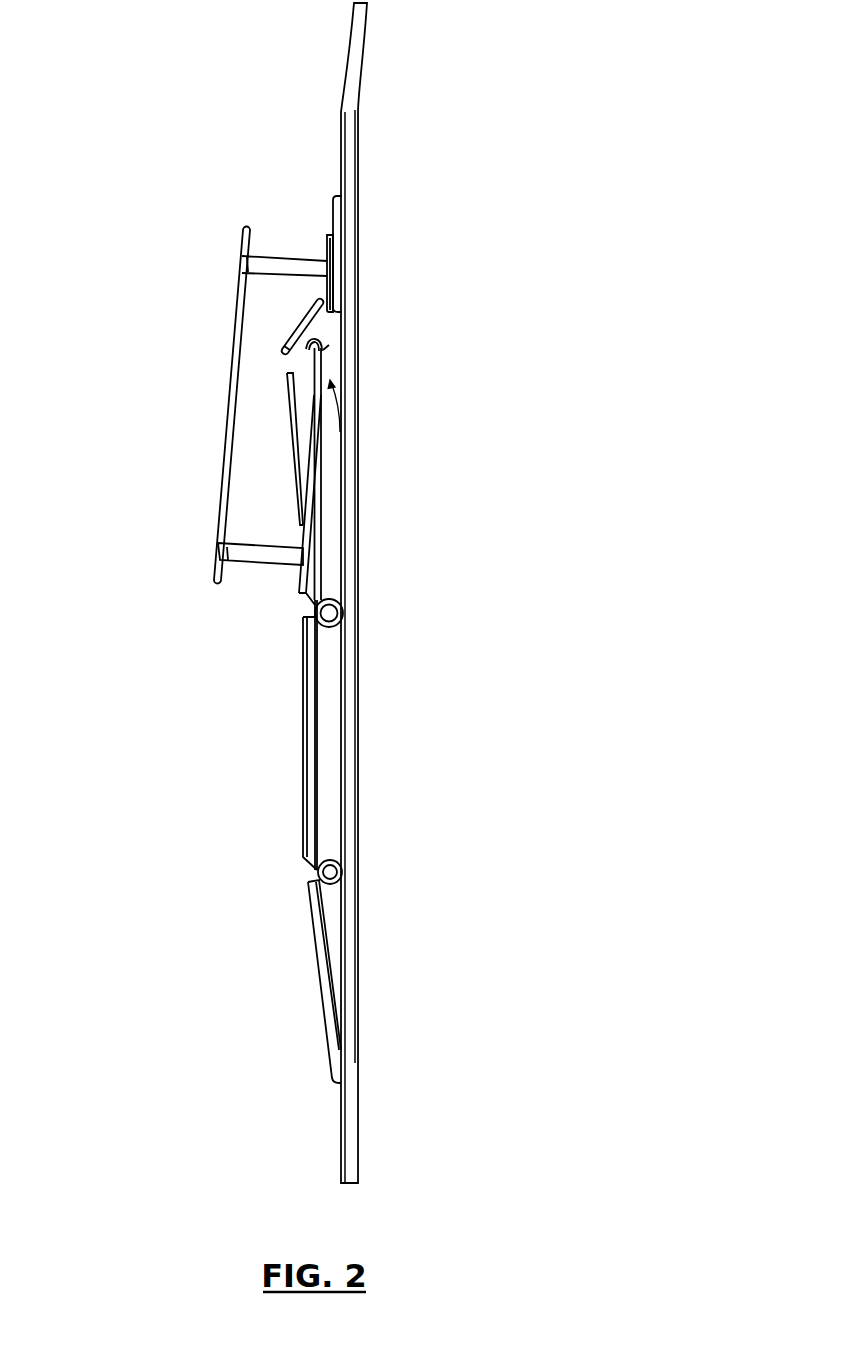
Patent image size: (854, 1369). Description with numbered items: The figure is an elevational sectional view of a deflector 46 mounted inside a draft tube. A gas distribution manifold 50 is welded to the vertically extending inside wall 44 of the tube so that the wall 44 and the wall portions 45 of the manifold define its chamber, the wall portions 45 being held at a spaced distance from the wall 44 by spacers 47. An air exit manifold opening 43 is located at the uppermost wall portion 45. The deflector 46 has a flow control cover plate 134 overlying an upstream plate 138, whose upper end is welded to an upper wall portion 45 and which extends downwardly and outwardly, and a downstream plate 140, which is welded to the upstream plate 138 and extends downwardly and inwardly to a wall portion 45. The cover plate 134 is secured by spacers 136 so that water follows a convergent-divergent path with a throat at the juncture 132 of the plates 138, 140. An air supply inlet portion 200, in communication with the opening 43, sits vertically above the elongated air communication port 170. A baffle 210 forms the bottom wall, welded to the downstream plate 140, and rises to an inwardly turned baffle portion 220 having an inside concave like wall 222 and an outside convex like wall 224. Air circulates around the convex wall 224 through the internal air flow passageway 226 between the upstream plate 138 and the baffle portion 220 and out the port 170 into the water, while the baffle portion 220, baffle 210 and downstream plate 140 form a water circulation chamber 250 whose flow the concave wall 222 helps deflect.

The air exit manifold opening 43 is at (350, 418).
The vertically extending inside wall 44 is at (358, 722).
The wall portions 45 is at (342, 216).
The deflector 46 is at (136, 393).
The spacers 47 is at (343, 607).
The gas distribution manifold 50 is at (303, 777).
The juncture 132 is at (288, 343).
The flow control cover plate 134 is at (308, 312).
The spacers 136 is at (270, 256).
The upstream plate 138 is at (312, 306).
The downstream plate 140 is at (225, 449).
The elongated air communication port 170 is at (271, 384).
The air supply inlet portion 200 is at (340, 334).
The baffle 210 is at (326, 363).
The baffle portion 220 is at (326, 340).
The inside concave like wall 222 is at (306, 348).
The outside convex like wall 224 is at (338, 331).
The internal air flow passageway 226 is at (242, 312).
The water circulation chamber 250 is at (288, 410).